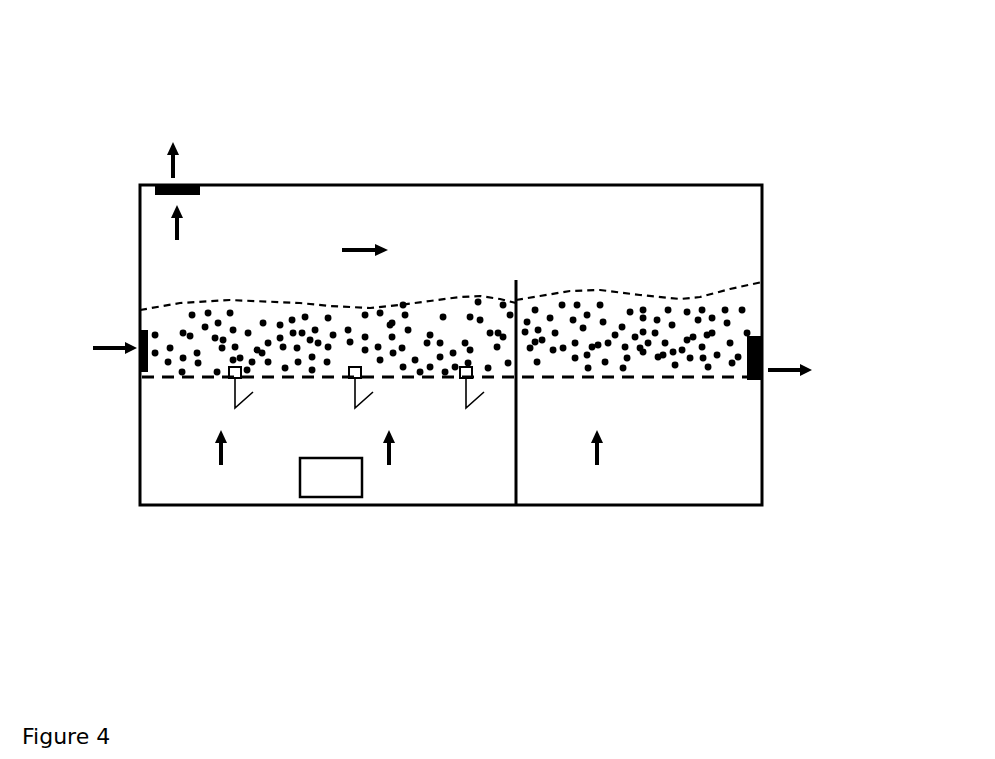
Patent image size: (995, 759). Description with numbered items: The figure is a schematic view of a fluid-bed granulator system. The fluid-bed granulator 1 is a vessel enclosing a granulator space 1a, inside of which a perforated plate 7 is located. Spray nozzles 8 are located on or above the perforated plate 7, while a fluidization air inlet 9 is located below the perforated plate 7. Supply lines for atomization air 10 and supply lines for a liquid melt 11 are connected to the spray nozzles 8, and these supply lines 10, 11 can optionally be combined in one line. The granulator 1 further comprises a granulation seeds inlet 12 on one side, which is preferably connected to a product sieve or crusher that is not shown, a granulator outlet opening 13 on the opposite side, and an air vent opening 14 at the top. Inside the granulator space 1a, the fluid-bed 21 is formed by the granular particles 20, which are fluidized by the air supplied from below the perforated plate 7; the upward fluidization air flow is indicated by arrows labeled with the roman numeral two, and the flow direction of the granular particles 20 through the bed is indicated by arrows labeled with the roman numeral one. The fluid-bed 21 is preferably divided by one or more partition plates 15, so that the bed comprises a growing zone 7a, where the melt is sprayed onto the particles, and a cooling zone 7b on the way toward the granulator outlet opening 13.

The fluid-bed granulator 1 is at (346, 185).
The granulator space 1a is at (485, 228).
The perforated plate 7 is at (693, 378).
The growing zone 7a is at (303, 280).
The cooling zone 7b is at (628, 270).
The spray nozzles 8 is at (235, 380).
The fluidization air inlet 9 is at (330, 485).
The supply lines for atomization air 10 is at (478, 392).
The supply lines for a liquid melt 11 is at (478, 392).
The granulation seeds inlet 12 is at (140, 345).
The granulator outlet opening 13 is at (764, 360).
The air vent opening 14 is at (162, 185).
The partition plates 15 is at (515, 281).
The granular particles 20 is at (430, 318).
The fluid-bed 21 is at (252, 300).